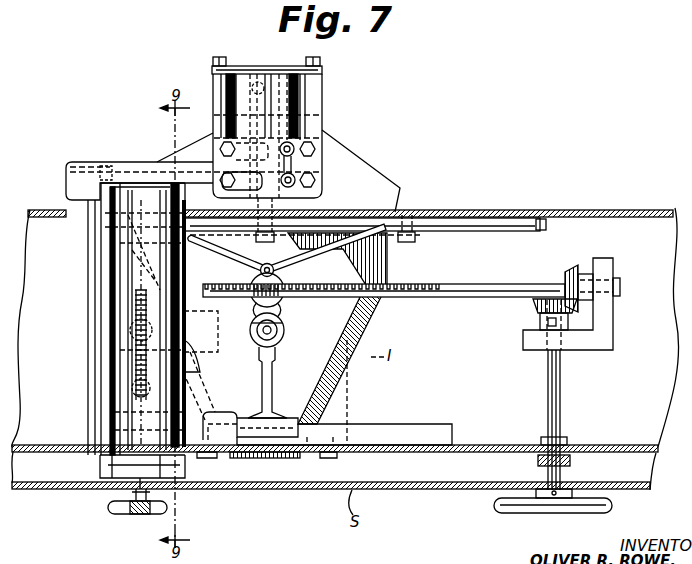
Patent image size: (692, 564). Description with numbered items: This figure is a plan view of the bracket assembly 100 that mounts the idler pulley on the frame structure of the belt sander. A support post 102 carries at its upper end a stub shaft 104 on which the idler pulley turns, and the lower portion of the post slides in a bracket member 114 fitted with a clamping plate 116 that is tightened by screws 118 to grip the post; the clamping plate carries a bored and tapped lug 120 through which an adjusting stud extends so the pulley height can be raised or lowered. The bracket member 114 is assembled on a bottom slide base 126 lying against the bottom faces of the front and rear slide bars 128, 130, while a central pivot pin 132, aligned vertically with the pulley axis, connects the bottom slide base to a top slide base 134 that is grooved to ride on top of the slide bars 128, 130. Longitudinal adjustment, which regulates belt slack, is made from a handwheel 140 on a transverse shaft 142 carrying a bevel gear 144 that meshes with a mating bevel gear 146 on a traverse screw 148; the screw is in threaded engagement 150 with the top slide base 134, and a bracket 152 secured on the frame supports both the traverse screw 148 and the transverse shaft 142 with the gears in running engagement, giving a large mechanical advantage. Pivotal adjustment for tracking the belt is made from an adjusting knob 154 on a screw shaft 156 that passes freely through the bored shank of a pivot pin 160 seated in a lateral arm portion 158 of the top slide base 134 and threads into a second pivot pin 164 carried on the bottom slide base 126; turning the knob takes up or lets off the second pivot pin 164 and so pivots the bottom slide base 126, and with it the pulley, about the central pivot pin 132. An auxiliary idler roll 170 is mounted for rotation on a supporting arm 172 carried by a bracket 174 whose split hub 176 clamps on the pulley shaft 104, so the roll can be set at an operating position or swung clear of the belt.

The bracket assembly 100 is at (330, 89).
The support post 102 is at (230, 86).
The stub shaft 104 is at (296, 200).
The bracket member 114 is at (316, 123).
The clamping plate 116 is at (290, 64).
The screws 118 is at (218, 57).
The bored and tapped lug 120 is at (256, 84).
The bottom slide base 126 is at (356, 164).
The front slide bar 128 is at (420, 428).
The rear slide bar 130 is at (490, 238).
The central pivot pin 132 is at (280, 326).
The top slide base 134 is at (362, 333).
The handwheel 140 is at (493, 508).
The transverse shaft 142 is at (562, 401).
The bevel gear 144 is at (532, 312).
The bevel gear 146 is at (590, 265).
The traverse screw 148 is at (430, 282).
The threaded engagement 150 is at (282, 274).
The bracket 152 is at (612, 342).
The adjusting knob 154 is at (140, 514).
The screw shaft 156 is at (100, 311).
The lateral arm portion 158 is at (195, 452).
The pivot pin 160 is at (100, 404).
The second pivot pin 164 is at (100, 333).
The auxiliary idler roll 170 is at (140, 192).
The supporting arm 172 is at (97, 425).
The bracket 174 is at (95, 160).
The split hub 176 is at (322, 182).